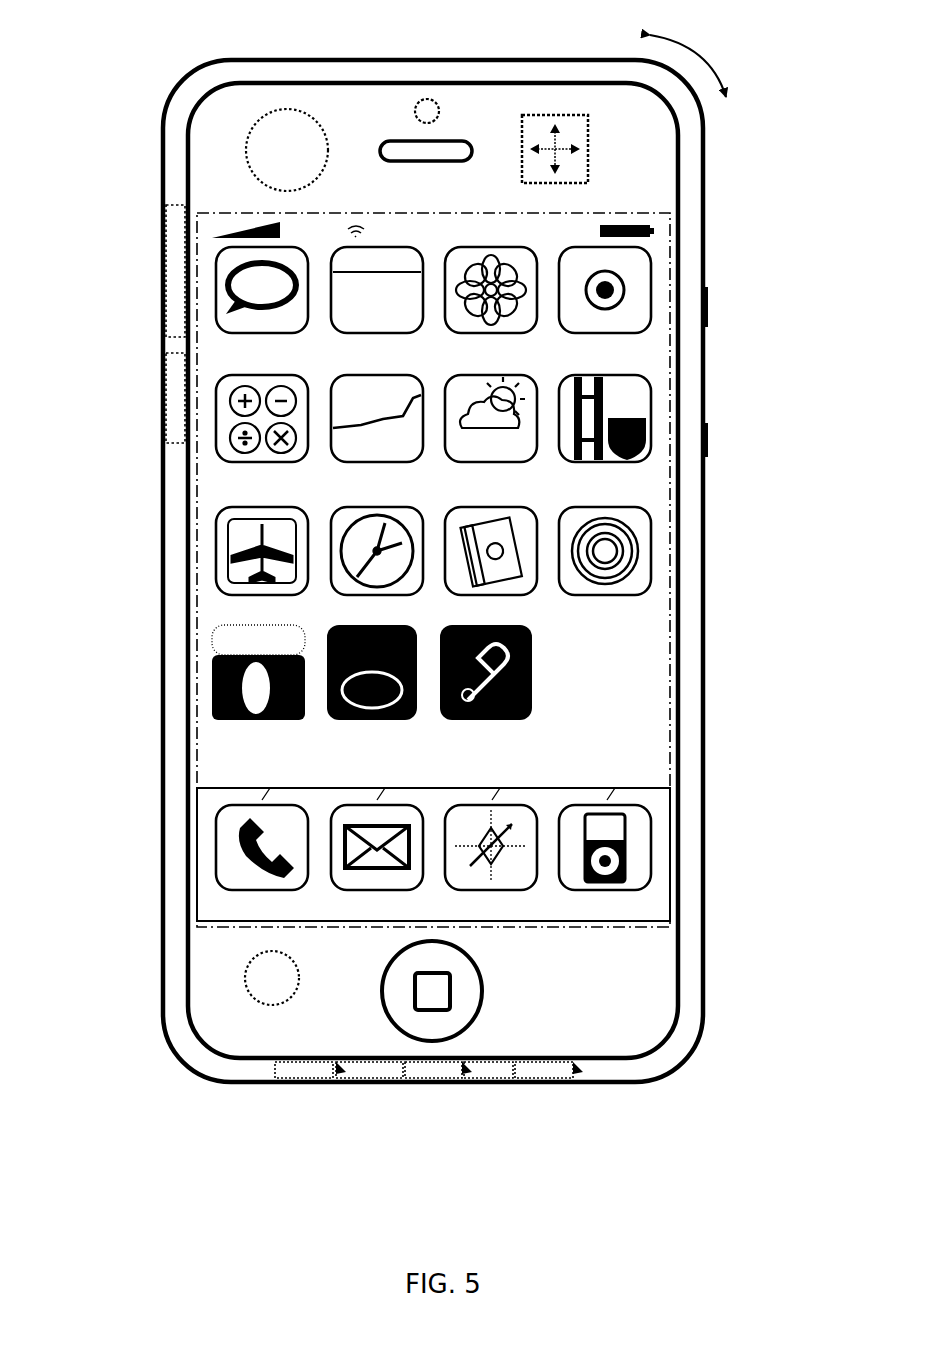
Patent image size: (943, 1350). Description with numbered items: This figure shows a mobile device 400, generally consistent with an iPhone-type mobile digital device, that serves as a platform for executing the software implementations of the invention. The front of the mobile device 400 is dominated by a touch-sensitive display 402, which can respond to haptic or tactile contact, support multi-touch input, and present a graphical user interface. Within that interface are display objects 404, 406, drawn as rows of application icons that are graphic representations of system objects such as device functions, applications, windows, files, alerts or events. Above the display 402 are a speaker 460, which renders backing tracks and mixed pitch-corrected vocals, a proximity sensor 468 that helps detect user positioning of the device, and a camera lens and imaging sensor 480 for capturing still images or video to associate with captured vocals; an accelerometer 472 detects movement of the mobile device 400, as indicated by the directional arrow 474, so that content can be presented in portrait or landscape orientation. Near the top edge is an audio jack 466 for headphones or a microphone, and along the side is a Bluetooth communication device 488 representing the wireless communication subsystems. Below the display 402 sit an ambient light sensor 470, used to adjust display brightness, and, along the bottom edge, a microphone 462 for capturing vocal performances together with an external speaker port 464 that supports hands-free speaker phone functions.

The mobile device 400 is at (520, 60).
The touch-sensitive display 402 is at (488, 549).
The display object 404 is at (664, 800).
The display object 406 is at (662, 256).
The speaker 460 is at (400, 161).
The microphone 462 is at (362, 1082).
The external speaker port 464 is at (592, 1082).
The audio jack 466 is at (298, 80).
The proximity sensor 468 is at (247, 160).
The ambient light sensor 470 is at (290, 999).
The accelerometer 472 is at (588, 164).
The directional arrow 474 is at (722, 68).
The camera lens and imaging sensor 480 is at (440, 116).
The Bluetooth communication device 488 is at (168, 352).